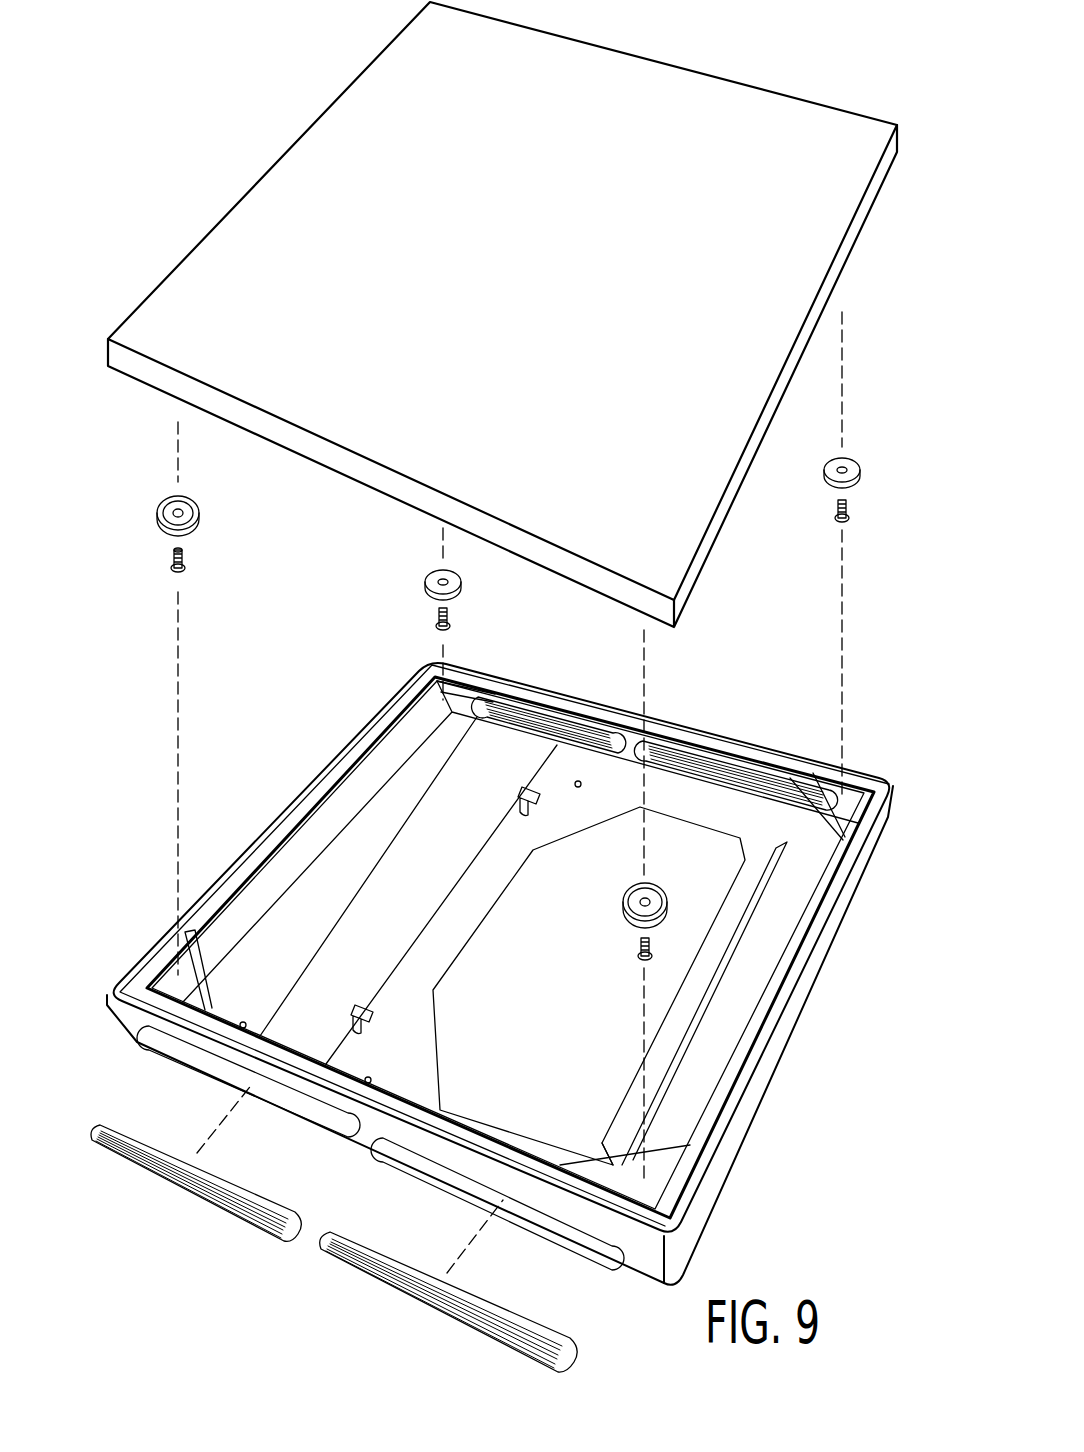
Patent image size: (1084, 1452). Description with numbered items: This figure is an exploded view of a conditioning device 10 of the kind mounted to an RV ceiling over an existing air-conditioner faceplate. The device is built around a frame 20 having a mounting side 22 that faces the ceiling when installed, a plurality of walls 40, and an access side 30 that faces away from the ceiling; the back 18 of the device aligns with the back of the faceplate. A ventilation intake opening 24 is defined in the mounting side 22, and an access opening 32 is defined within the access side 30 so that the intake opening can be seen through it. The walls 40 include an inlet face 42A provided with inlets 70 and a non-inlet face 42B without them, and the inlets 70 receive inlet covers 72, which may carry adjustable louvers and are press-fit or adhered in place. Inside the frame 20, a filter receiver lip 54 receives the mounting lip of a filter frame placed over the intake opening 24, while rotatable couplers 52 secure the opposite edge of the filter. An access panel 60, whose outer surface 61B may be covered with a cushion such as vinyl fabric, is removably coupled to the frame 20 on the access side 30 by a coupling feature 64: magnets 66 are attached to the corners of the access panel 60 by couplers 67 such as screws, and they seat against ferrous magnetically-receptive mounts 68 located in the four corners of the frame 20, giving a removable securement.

The conditioning device 10 is at (140, 412).
The back 18 is at (340, 735).
The frame 20 is at (898, 812).
The mounting side 22 is at (733, 825).
The ventilation intake opening 24 is at (723, 807).
The access side 30 is at (673, 723).
The access opening 32 is at (703, 735).
The walls 40 is at (820, 960).
The inlet face 42A is at (645, 1262).
The non-inlet face 42B is at (697, 1212).
The rotatable couplers 52 is at (357, 1010).
The filter receiver lip 54 is at (705, 975).
The access panel 60 is at (830, 120).
The outer surface 61B is at (637, 145).
The coupling feature 64 is at (510, 538).
The magnets 66 is at (158, 518).
The couplers 67 is at (170, 573).
The magnetically-receptive mounts 68 is at (165, 982).
The inlets 70 is at (170, 1063).
The inlet covers 72 is at (115, 1165).